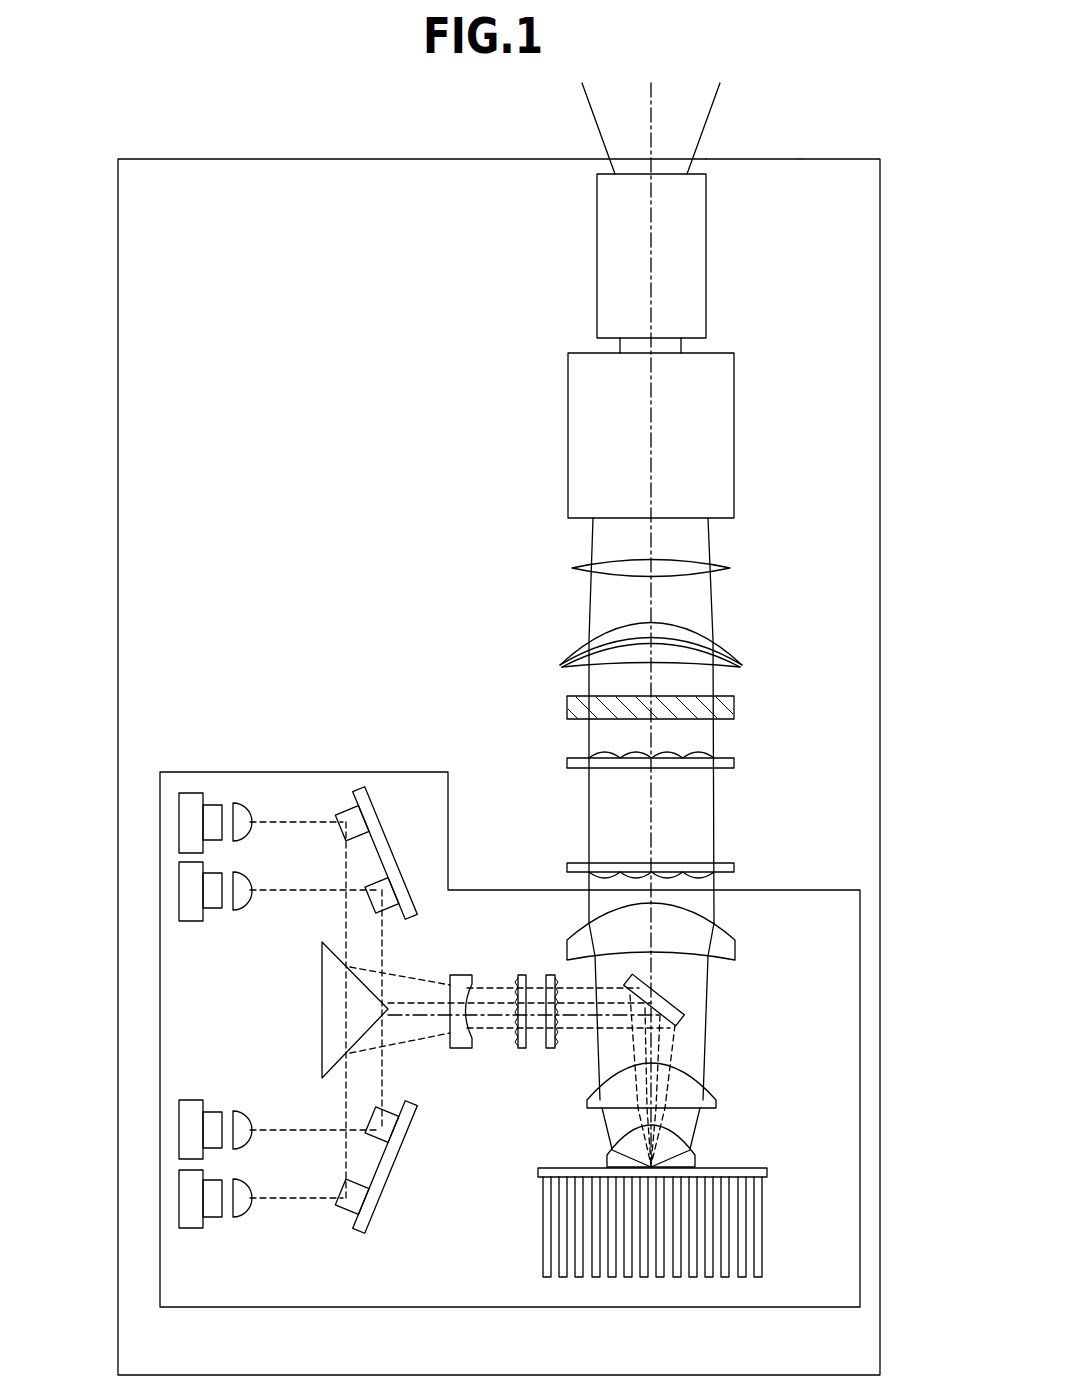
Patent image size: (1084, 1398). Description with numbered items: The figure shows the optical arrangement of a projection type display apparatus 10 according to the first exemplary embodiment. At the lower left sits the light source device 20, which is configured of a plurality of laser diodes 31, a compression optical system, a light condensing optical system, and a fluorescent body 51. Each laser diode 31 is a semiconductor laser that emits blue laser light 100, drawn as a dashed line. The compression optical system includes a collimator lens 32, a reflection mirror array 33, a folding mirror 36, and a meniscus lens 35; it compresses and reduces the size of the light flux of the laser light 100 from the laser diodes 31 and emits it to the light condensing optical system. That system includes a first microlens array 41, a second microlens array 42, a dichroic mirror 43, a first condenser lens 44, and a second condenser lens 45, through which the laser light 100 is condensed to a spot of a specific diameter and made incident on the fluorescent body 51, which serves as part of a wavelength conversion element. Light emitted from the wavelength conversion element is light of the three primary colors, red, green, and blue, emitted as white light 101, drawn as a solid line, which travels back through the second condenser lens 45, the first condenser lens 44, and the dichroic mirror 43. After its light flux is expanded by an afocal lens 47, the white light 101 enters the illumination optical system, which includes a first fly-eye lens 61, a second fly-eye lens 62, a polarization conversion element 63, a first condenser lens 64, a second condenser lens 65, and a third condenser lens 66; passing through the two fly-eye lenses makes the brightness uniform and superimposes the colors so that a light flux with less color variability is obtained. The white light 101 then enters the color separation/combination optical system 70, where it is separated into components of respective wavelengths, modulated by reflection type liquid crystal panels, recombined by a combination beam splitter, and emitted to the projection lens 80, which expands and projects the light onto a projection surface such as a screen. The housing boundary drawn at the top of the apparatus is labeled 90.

The projection type display apparatus 10 is at (243, 152).
The light source device 20 is at (272, 765).
The laser diode 31 is at (192, 921).
The collimator lens 32 is at (237, 910).
The reflection mirror array 33 is at (390, 838).
The meniscus lens 35 is at (462, 1050).
The folding mirror 36 is at (322, 1007).
The first microlens array 41 is at (520, 975).
The second microlens array 42 is at (550, 975).
The dichroic mirror 43 is at (668, 1002).
The first condenser lens 44 is at (716, 1104).
The second condenser lens 45 is at (690, 1160).
The afocal lens 47 is at (735, 951).
The fluorescent body 51 is at (652, 1177).
The first fly-eye lens 61 is at (567, 868).
The second fly-eye lens 62 is at (567, 763).
The polarization conversion element 63 is at (567, 707).
The first condenser lens 64 is at (742, 665).
The second condenser lens 65 is at (735, 645).
The third condenser lens 66 is at (572, 568).
The color separation/combination optical system 70 is at (734, 432).
The projection lens 80 is at (706, 250).
The housing top 90 is at (786, 159).
The laser light 100 is at (579, 1030).
The white light 101 is at (714, 812).